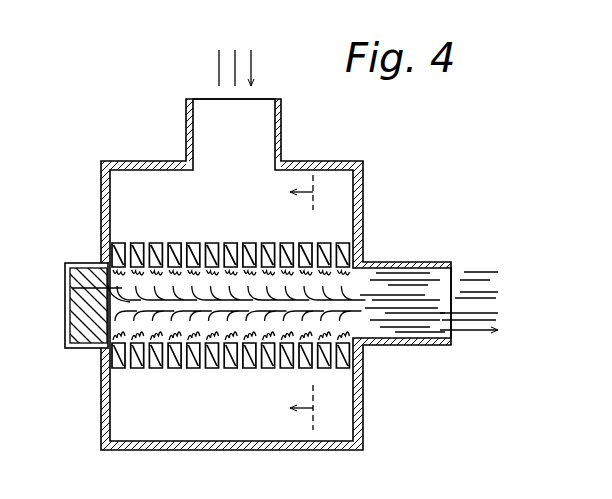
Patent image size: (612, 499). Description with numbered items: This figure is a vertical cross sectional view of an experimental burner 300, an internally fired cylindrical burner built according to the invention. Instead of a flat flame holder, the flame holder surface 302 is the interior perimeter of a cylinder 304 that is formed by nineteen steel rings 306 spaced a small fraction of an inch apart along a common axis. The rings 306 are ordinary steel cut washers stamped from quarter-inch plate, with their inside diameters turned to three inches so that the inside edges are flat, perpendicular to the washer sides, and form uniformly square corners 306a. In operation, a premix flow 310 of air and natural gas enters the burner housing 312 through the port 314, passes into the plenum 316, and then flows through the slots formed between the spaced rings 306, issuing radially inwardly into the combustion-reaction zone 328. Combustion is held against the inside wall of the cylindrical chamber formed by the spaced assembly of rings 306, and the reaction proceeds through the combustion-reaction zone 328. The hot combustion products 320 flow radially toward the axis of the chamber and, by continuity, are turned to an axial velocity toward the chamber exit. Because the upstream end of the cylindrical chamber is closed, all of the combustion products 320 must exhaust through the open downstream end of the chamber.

The experimental burner 300 is at (426, 200).
The flame holder surface 302 is at (108, 328).
The cylinder 304 is at (64, 287).
The steel rings 306 is at (175, 369).
The square corners 306a is at (176, 243).
The premix flow 310 is at (234, 53).
The burner housing 312 is at (363, 186).
The port 314 is at (186, 117).
The plenum 316 is at (192, 199).
The hot combustion products 320 is at (489, 301).
The combustion-reaction zone 328 is at (345, 293).